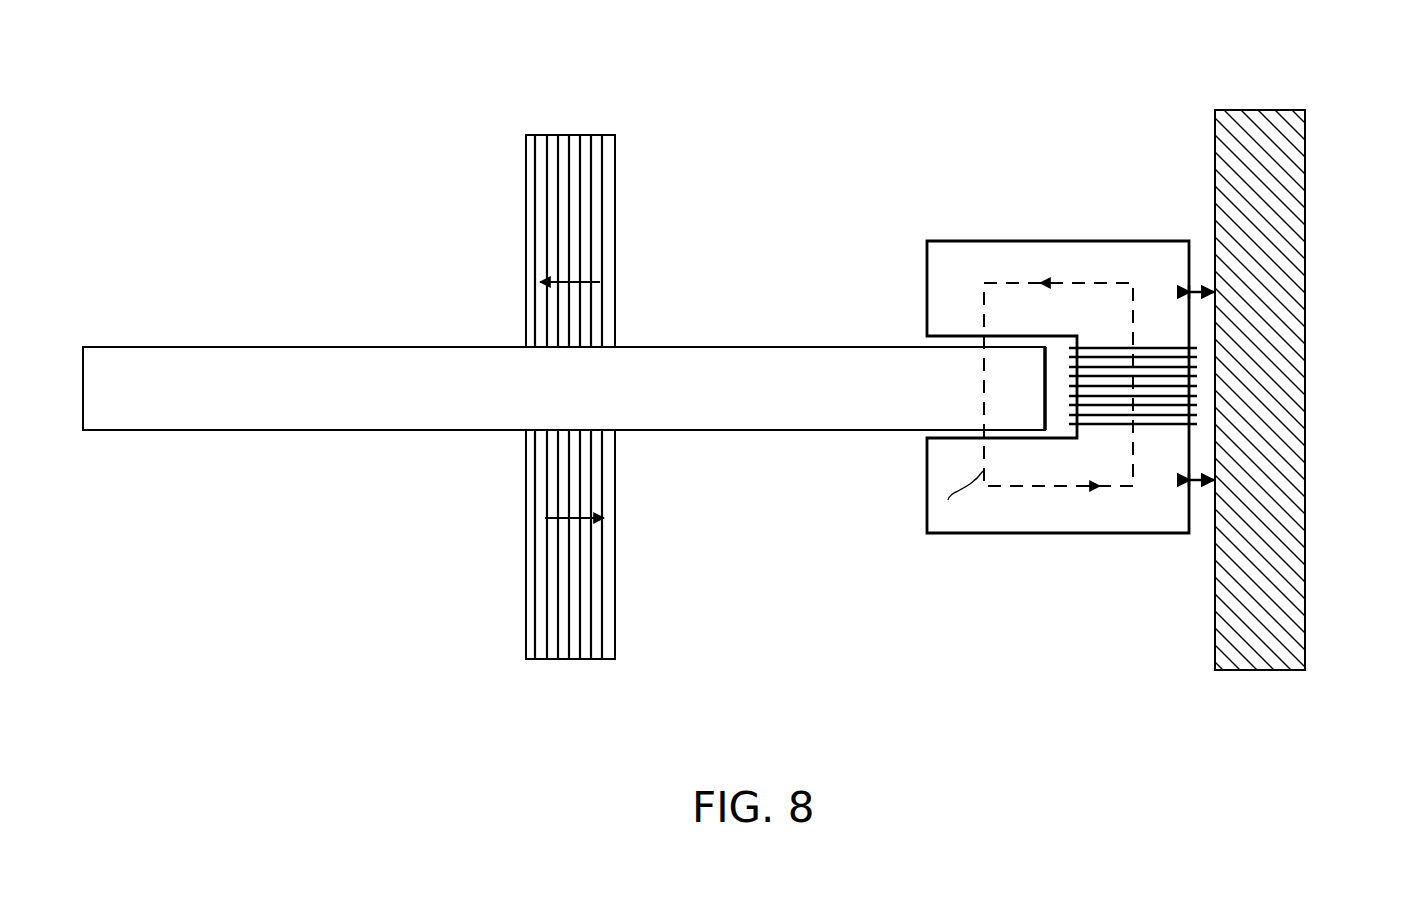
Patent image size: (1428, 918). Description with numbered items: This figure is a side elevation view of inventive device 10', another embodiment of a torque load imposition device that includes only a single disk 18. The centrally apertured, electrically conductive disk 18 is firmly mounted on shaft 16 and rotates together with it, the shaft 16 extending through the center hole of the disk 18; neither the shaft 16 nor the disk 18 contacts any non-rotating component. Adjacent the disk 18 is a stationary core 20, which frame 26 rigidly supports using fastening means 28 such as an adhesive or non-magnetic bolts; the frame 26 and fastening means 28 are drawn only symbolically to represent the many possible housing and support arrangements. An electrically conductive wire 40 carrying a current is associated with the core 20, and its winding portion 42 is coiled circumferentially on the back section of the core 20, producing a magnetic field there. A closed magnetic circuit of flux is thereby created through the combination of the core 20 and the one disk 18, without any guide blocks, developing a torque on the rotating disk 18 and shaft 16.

The inventive device 10' is at (210, 85).
The shaft 16 is at (544, 580).
The disk 18 is at (254, 344).
The core 20 is at (1072, 222).
The frame 26 is at (1305, 355).
The fastening means 28 is at (1203, 290).
The wire 40 is at (1200, 413).
The winding portion 42 is at (1397, 447).